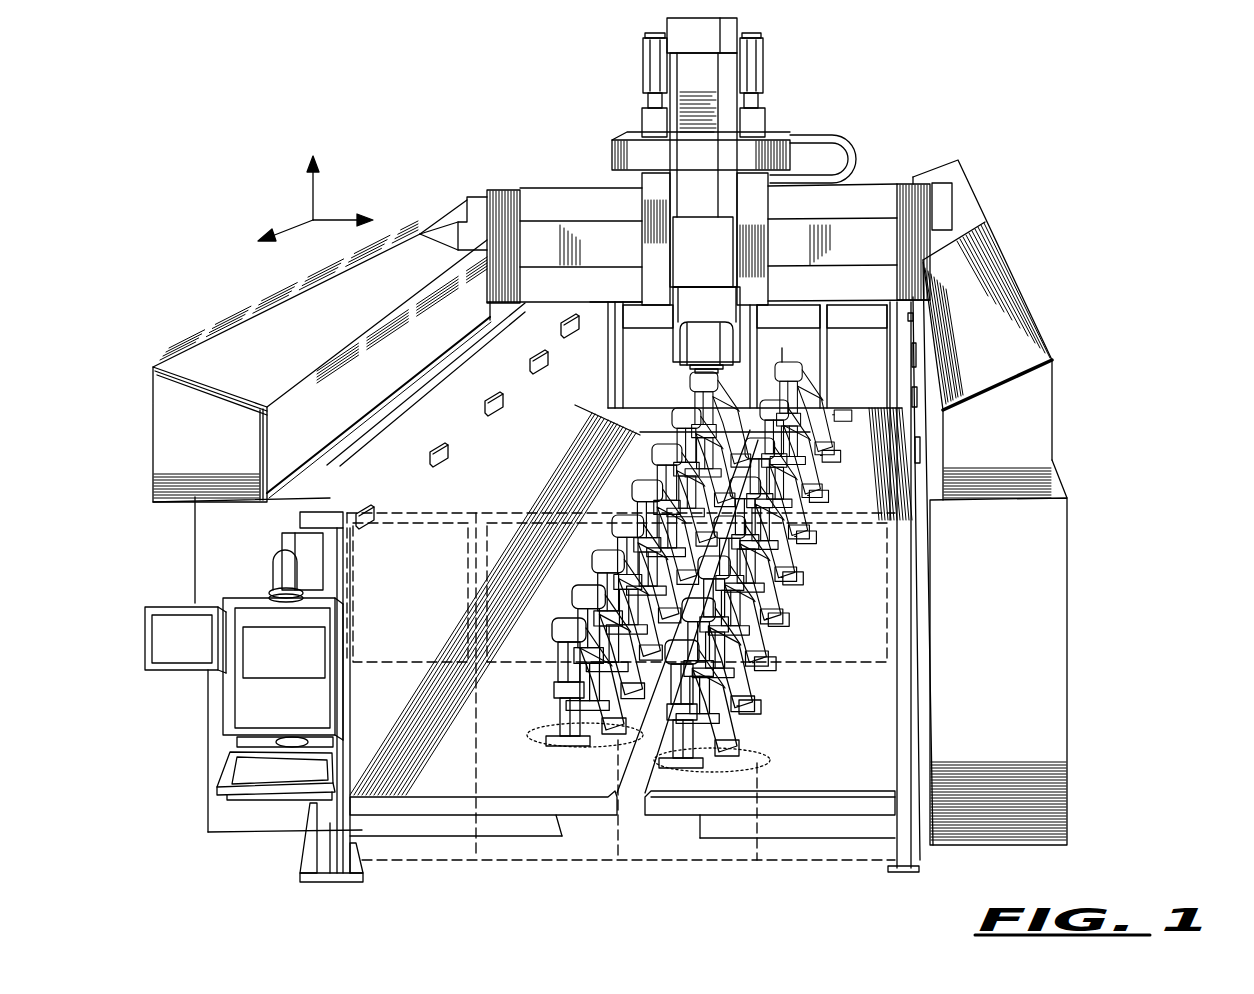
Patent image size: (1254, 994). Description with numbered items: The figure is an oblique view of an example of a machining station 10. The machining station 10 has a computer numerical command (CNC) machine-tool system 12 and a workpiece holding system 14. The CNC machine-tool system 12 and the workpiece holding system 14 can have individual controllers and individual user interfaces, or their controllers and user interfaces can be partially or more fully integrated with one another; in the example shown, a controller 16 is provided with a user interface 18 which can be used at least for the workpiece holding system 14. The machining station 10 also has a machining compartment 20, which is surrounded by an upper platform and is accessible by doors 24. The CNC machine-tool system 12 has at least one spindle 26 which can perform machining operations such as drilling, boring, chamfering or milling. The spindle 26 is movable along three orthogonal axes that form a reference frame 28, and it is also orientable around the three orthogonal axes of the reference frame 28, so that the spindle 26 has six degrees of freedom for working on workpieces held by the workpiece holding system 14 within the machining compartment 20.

The machining station 10 is at (414, 170).
The CNC machine-tool system 12 is at (668, 72).
The workpiece holding system 14 is at (642, 446).
The controller 16 is at (262, 697).
The user interface 18 is at (257, 770).
The machining compartment 20 is at (514, 472).
The doors 24 is at (596, 850).
The spindle 26 is at (700, 348).
The reference frame 28 is at (313, 220).